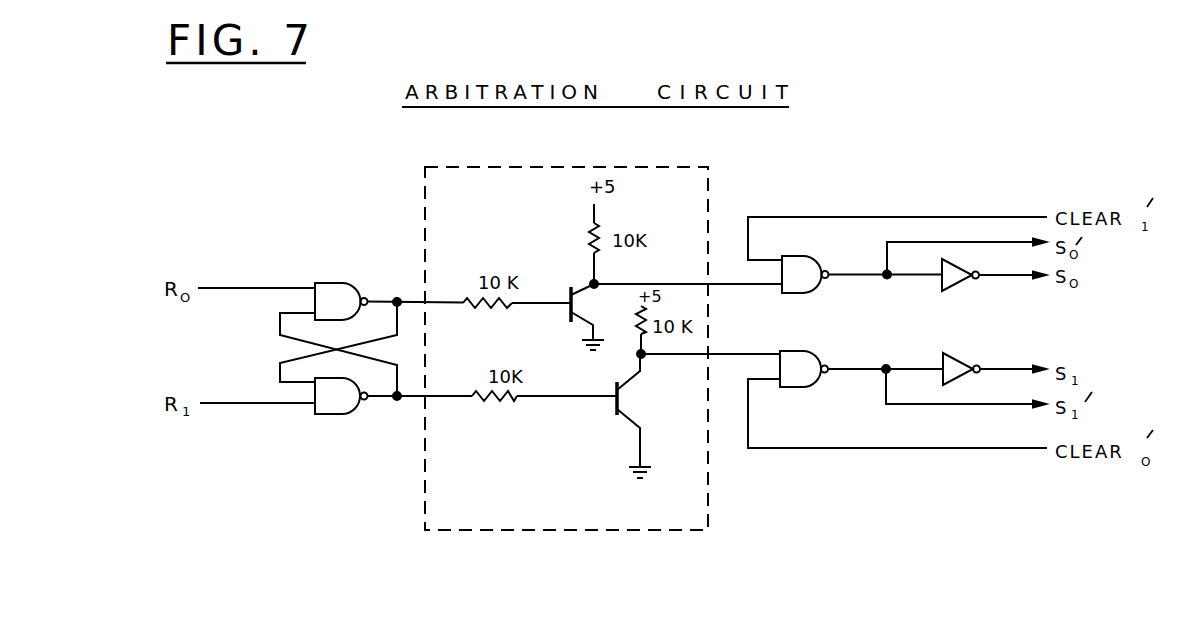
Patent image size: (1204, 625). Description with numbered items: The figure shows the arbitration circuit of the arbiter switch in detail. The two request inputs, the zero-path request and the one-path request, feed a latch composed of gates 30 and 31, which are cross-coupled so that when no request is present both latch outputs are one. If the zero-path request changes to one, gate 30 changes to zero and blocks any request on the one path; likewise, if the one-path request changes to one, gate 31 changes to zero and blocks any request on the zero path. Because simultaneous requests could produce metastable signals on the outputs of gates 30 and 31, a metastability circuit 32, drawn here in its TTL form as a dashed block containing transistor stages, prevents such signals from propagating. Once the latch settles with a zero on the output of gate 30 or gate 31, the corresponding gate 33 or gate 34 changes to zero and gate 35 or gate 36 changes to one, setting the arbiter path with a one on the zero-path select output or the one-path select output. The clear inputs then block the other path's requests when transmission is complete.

The gate 30 is at (341, 283).
The gate 31 is at (336, 414).
The metastability circuit 32 is at (537, 532).
The gate 33 is at (814, 257).
The gate 34 is at (810, 387).
The gate 35 is at (959, 284).
The gate 36 is at (962, 380).